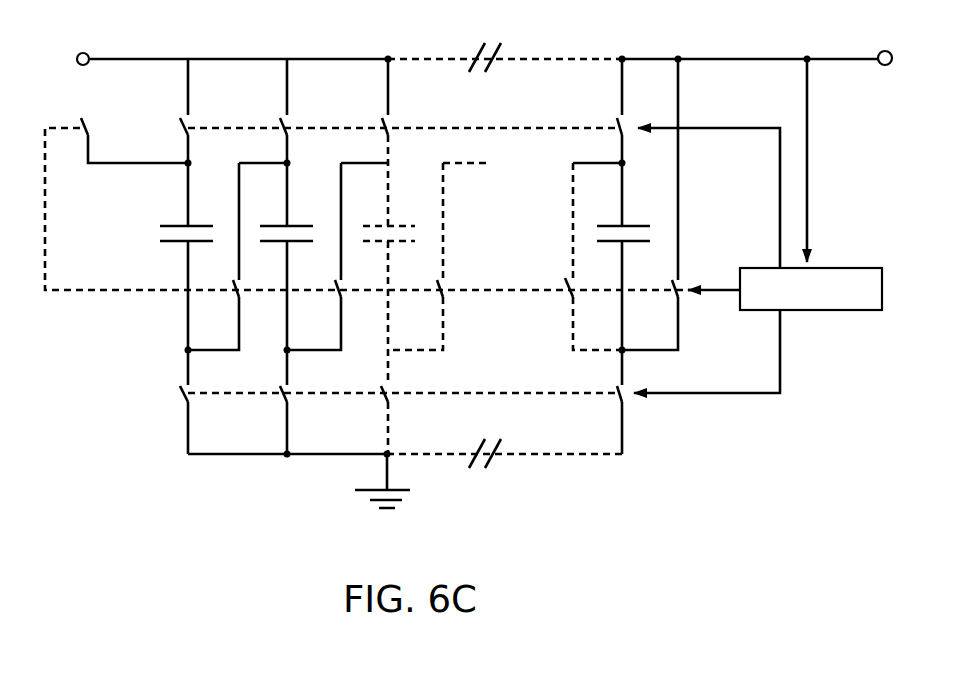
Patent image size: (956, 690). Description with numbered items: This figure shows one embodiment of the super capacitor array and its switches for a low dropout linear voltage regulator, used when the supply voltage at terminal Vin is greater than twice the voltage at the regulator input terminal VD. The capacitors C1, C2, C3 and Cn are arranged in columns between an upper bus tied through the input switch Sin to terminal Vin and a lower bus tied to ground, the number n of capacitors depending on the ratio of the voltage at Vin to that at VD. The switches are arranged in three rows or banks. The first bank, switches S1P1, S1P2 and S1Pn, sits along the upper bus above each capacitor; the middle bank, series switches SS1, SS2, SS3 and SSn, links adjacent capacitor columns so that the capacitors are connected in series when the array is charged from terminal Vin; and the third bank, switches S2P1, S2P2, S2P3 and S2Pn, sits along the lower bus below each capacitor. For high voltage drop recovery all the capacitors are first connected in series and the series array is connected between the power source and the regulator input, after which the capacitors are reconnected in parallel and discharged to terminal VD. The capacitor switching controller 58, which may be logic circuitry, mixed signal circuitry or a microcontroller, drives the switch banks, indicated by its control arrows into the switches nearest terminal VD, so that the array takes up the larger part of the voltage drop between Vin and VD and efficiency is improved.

The input voltage terminal Vin is at (79, 54).
The regulator input terminal VD is at (883, 66).
The input switch Sin is at (184, 132).
The first-bank switch S1P1 is at (281, 128).
The first-bank switch S1P2 is at (382, 128).
The first-bank switch S1Pn is at (617, 128).
The capacitor C1 is at (184, 226).
The capacitor C2 is at (283, 226).
The capacitor C3 is at (384, 226).
The capacitor Cn is at (618, 226).
The series switch SS1 is at (236, 292).
The series switch SS2 is at (338, 292).
The series switch SS3 is at (440, 292).
The series switch SSn is at (683, 292).
The second-bank switch S2P1 is at (182, 394).
The second-bank switch S2P2 is at (282, 394).
The second-bank switch S2P3 is at (383, 394).
The second-bank switch S2Pn is at (618, 394).
The capacitor switching controller 58 is at (866, 262).